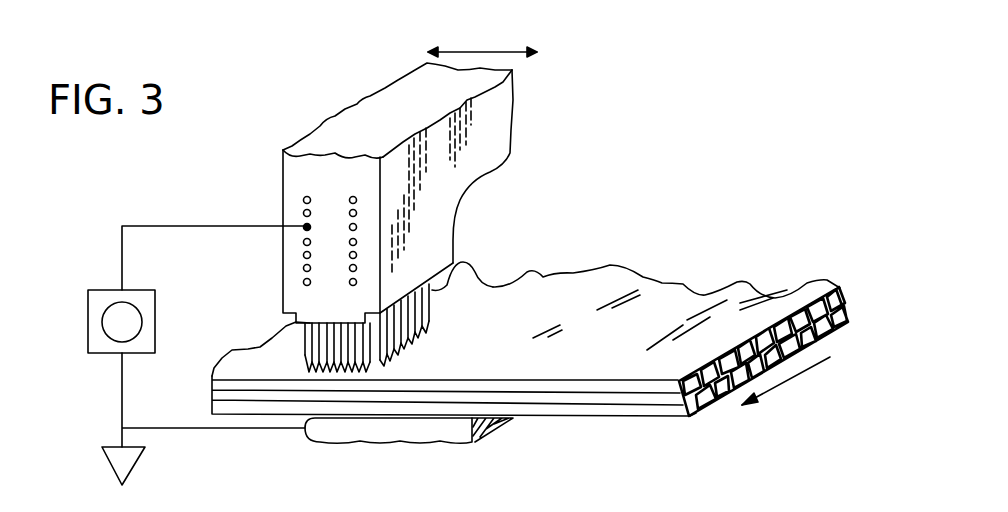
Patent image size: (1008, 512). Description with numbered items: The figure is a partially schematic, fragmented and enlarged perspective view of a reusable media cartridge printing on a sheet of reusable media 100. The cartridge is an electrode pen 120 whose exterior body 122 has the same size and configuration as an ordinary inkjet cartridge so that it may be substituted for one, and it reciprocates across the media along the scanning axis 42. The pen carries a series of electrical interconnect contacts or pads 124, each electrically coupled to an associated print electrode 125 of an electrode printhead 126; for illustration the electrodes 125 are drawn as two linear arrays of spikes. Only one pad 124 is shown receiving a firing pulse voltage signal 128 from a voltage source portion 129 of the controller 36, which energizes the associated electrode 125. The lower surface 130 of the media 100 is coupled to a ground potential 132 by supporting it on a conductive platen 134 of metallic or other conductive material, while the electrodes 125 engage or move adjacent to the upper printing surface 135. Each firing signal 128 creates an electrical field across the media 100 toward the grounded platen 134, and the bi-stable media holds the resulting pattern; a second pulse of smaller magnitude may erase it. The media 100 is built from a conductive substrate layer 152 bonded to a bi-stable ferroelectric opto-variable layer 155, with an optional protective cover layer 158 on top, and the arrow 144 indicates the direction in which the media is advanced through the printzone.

The reusable media 100 is at (660, 284).
The electrode pen 120 is at (403, 100).
The exterior body 122 is at (491, 117).
The electrical interconnect contacts 124 is at (304, 226).
The print electrode 125 is at (315, 368).
The electrode printhead 126 is at (467, 274).
The firing pulse voltage signal 128 is at (122, 263).
The voltage source portion 129 is at (108, 343).
The lower surface 130 is at (577, 417).
The ground potential 132 is at (124, 458).
The conductive platen 134 is at (370, 433).
The upper printing surface 135 is at (747, 297).
The arrow 144 is at (787, 376).
The conductive substrate layer 152 is at (712, 393).
The opto-variable layer 155 is at (843, 314).
The protective cover layer 158 is at (840, 288).
The controller 36 is at (88, 312).
The scanning axis 42 is at (475, 52).